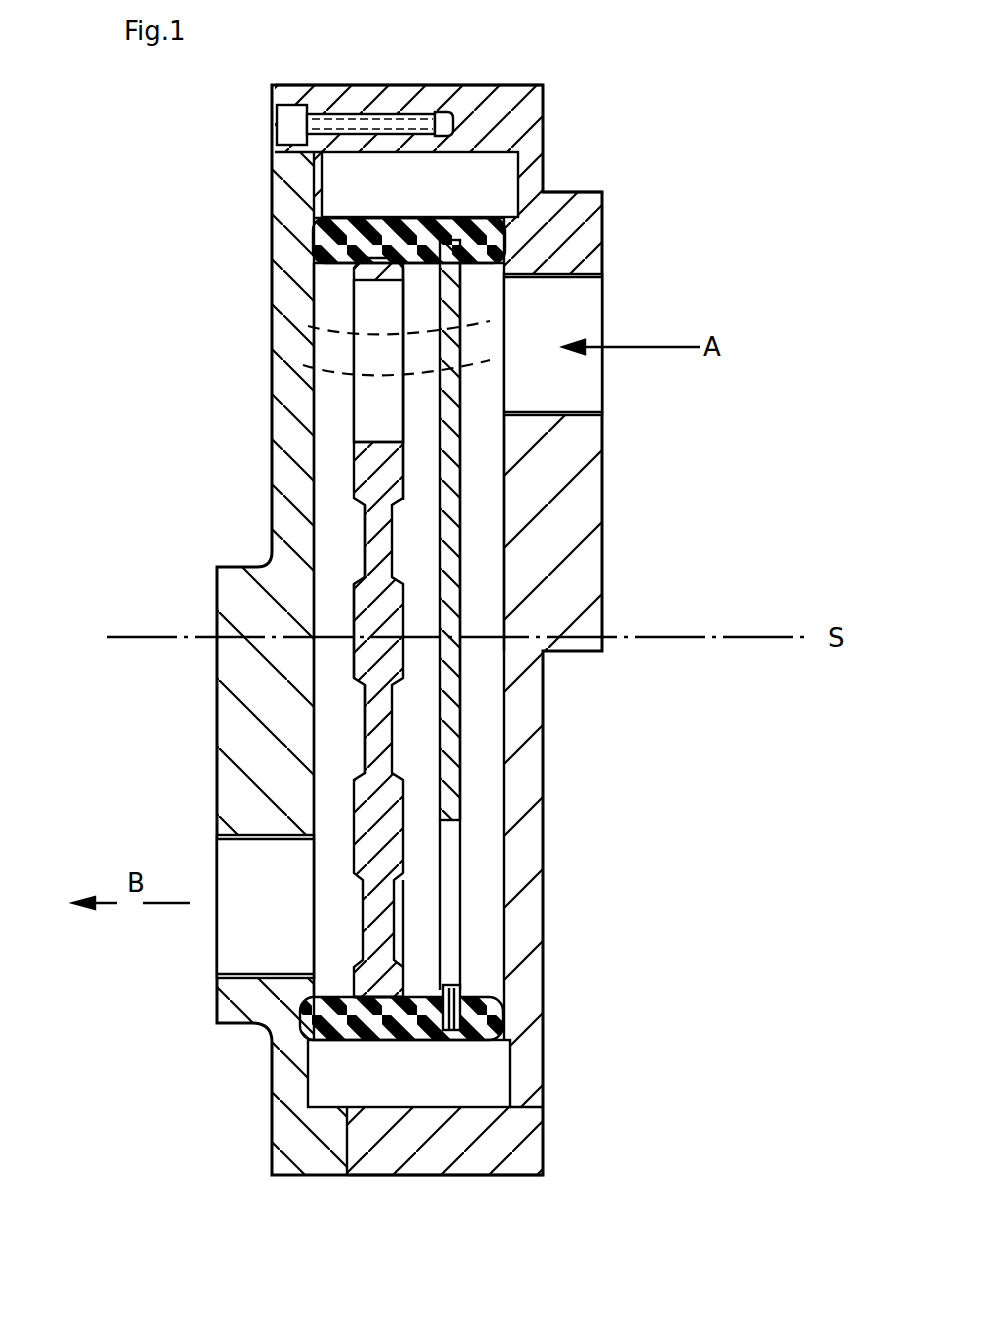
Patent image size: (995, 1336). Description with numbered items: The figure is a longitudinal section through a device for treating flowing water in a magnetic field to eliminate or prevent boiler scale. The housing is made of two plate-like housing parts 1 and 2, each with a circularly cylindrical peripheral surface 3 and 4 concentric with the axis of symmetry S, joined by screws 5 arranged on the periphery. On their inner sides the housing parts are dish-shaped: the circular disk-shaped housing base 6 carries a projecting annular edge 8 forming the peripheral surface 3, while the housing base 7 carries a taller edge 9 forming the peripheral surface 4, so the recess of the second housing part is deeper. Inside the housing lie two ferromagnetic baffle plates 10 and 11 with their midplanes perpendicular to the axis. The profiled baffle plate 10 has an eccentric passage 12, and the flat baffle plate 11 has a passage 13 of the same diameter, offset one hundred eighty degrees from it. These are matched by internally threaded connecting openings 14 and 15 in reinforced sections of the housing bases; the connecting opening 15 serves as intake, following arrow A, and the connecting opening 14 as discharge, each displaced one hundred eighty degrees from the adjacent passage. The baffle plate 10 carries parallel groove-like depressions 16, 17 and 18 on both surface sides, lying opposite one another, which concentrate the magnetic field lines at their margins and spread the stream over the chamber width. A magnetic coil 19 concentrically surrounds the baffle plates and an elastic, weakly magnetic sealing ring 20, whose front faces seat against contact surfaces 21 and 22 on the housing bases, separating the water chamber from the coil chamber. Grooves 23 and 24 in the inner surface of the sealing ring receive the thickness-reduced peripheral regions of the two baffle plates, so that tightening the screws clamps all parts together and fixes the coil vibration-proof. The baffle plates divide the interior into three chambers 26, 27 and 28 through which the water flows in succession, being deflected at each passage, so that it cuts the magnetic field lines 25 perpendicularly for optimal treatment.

The housing part 1 is at (292, 1145).
The housing part 2 is at (465, 1150).
The peripheral surface 3 is at (330, 96).
The peripheral surface 4 is at (466, 104).
The screws 5 is at (366, 117).
The housing base 6 is at (295, 413).
The housing base 7 is at (522, 840).
The edge 8 is at (343, 1140).
The edge 9 is at (513, 1133).
The baffle plate 10 is at (372, 728).
The baffle plate 11 is at (452, 725).
The passage 12 is at (378, 360).
The passage 13 is at (450, 922).
The connecting opening 14 is at (243, 952).
The connecting opening 15 is at (583, 397).
The groove-like depression 16 is at (340, 543).
The groove-like depression 17 is at (350, 710).
The groove-like depression 18 is at (353, 895).
The magnetic coil 19 is at (480, 178).
The sealing ring 20 is at (307, 1027).
The contact surface 21 is at (313, 243).
The contact surface 22 is at (515, 258).
The groove 23 is at (383, 217).
The groove 24 is at (515, 226).
The magnetic field lines 25 is at (523, 346).
The chamber 26 is at (485, 575).
The chamber 27 is at (417, 755).
The chamber 28 is at (333, 618).